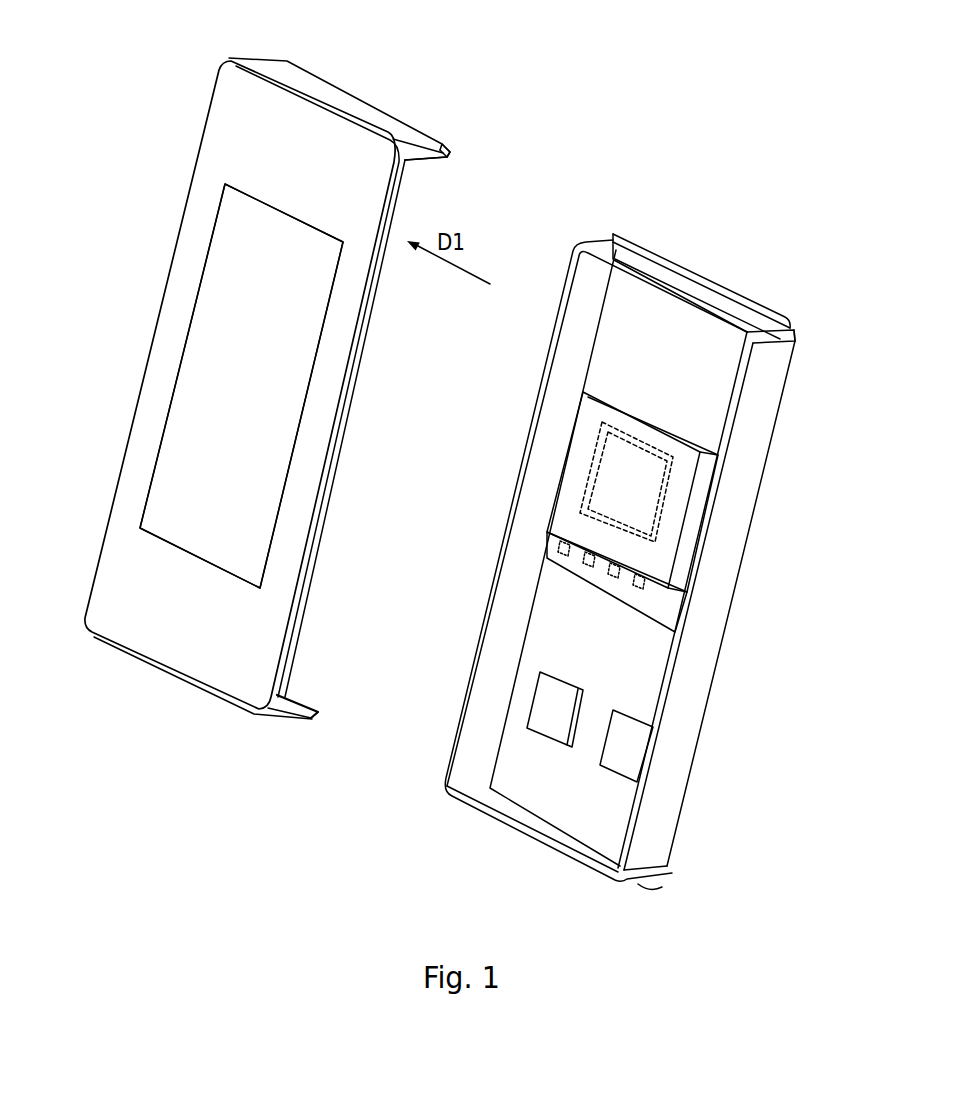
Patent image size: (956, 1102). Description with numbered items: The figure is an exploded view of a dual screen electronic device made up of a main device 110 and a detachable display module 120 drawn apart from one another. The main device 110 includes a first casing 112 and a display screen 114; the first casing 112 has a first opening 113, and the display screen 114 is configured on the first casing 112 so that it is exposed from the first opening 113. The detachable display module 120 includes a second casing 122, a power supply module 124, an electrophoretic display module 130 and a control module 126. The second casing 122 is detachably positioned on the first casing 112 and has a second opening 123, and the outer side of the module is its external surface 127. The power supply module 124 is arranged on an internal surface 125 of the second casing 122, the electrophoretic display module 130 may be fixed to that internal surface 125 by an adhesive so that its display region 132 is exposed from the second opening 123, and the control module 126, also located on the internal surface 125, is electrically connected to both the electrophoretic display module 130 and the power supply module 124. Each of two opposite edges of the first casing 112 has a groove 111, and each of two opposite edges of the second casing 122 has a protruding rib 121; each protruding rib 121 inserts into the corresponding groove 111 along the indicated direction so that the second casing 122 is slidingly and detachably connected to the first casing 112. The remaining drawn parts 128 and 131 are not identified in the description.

The main device 110 is at (184, 121).
The groove 111 is at (456, 164).
The first casing 112 is at (300, 122).
The first opening 113 is at (198, 216).
The display screen 114 is at (200, 372).
The detachable display module 120 is at (553, 247).
The protruding rib 121 is at (678, 273).
The second casing 122 is at (764, 392).
The second opening 123 is at (580, 454).
The power supply module 124 is at (547, 710).
The internal surface 125 is at (577, 817).
The control module 126 is at (637, 743).
The external surface 127 is at (745, 607).
The connector 128 is at (583, 560).
The electrophoretic display module 130 is at (697, 458).
The side surface 131 is at (693, 460).
The display region 132 is at (587, 497).